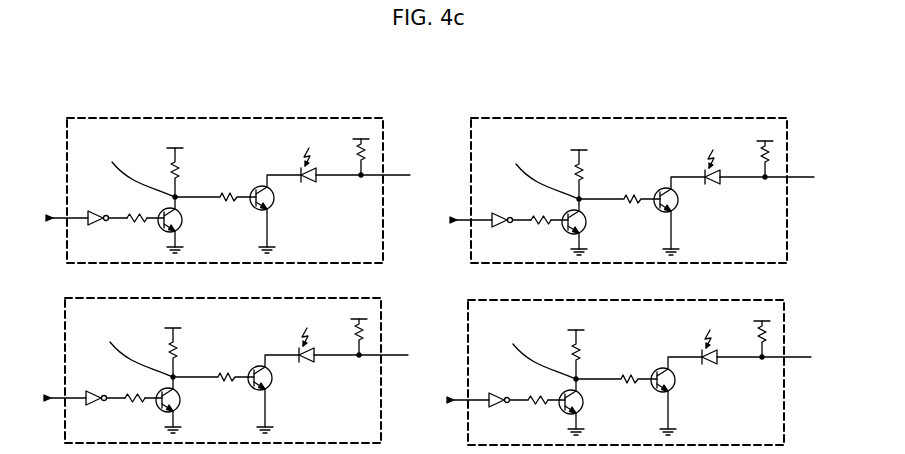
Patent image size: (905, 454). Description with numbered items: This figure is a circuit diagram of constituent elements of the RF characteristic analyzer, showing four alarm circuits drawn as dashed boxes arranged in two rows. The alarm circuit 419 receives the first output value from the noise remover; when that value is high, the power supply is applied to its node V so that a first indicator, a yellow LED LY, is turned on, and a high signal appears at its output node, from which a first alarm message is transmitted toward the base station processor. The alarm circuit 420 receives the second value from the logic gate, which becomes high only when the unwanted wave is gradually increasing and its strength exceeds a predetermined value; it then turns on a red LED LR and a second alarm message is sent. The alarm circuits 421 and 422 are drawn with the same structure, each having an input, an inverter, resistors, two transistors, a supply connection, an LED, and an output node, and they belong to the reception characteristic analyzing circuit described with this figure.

The alarm circuit 419 is at (315, 113).
The alarm circuit 420 is at (718, 113).
The third LED drive circuit (yellow LED LY, input Vp3, output Va3) 421 is at (313, 293).
The fourth LED drive circuit (red LED LR, input Vp4, output Va4) 422 is at (715, 295).